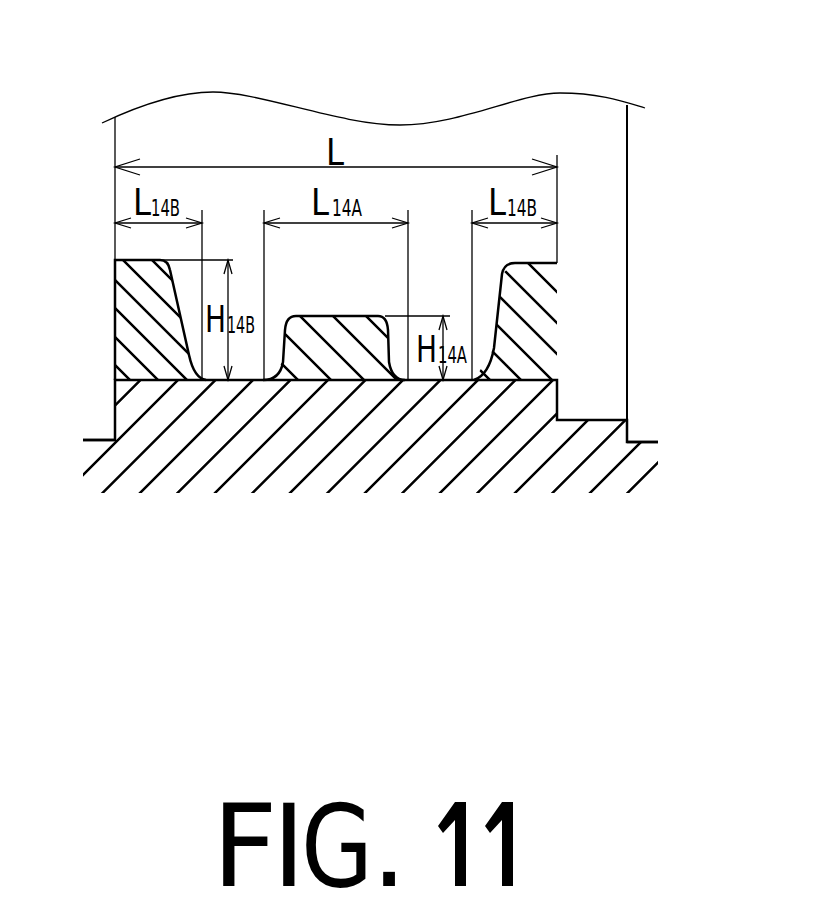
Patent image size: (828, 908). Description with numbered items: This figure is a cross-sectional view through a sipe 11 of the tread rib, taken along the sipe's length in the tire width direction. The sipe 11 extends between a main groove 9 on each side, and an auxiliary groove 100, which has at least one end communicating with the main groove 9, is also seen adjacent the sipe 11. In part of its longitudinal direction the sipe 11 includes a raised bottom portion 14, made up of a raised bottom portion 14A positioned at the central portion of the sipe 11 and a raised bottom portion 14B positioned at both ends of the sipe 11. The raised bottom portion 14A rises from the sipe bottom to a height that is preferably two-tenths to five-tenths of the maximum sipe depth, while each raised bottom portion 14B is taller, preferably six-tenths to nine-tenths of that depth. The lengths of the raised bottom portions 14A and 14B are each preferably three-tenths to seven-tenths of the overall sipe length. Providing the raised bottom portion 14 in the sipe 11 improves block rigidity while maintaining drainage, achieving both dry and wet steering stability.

The main groove 9 is at (98, 431).
The sipe 11 is at (438, 263).
The raised bottom portion 14 is at (332, 444).
The raised bottom portion 14A is at (337, 343).
The raised bottom portion 14B is at (145, 322).
The auxiliary groove 100 is at (585, 343).